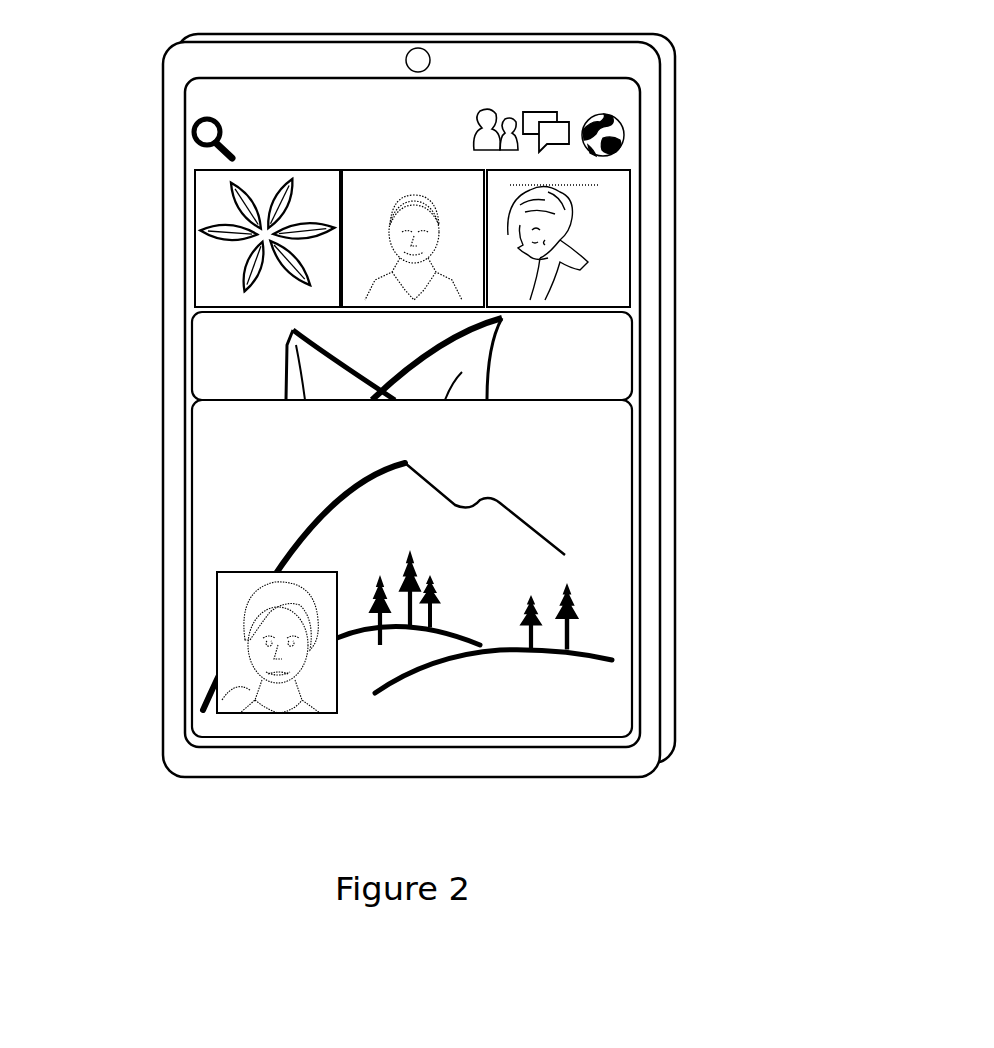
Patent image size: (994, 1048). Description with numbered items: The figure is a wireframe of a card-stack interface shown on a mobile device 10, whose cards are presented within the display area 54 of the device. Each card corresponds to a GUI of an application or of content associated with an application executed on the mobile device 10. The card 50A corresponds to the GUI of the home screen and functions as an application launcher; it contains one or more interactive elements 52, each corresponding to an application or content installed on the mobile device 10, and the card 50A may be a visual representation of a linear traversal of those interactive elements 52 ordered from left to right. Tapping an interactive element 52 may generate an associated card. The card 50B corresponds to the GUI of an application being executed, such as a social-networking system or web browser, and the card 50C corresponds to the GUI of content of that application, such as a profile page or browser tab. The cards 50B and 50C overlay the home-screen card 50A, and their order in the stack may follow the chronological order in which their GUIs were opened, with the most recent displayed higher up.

The mobile device 10 is at (623, 40).
The interactive element 52 is at (207, 222).
The display area 54 is at (152, 85).
The card 50A is at (683, 168).
The card 50B is at (683, 315).
The card 50C is at (683, 410).